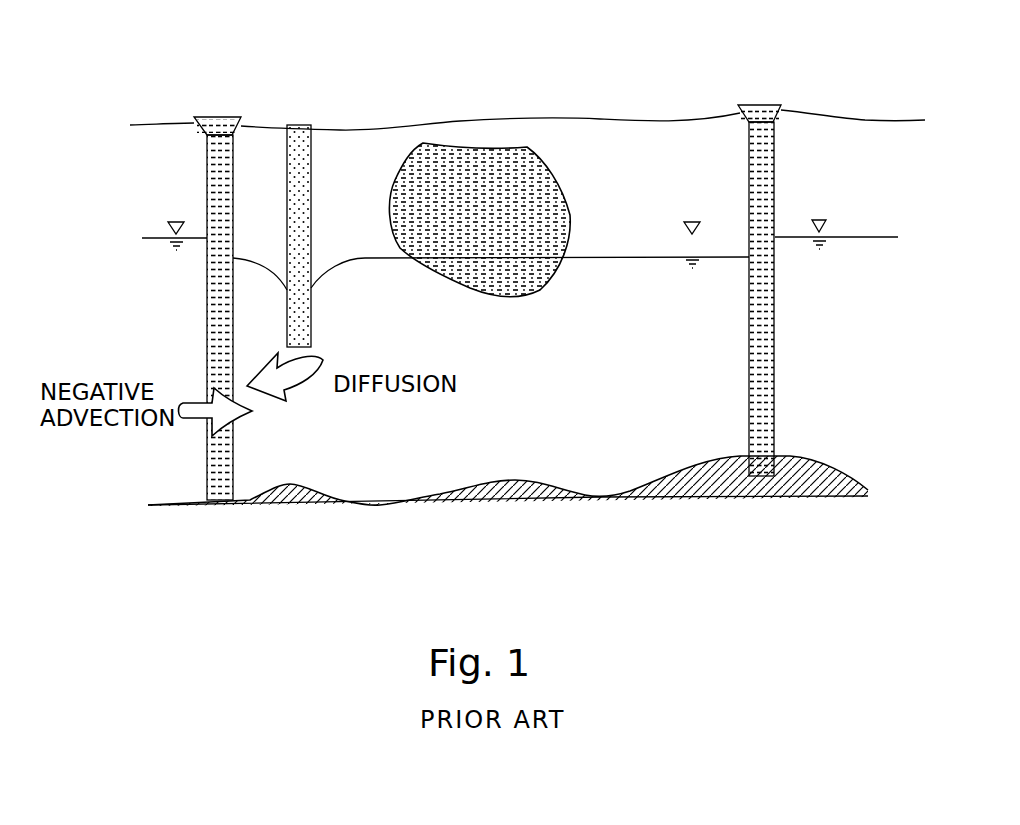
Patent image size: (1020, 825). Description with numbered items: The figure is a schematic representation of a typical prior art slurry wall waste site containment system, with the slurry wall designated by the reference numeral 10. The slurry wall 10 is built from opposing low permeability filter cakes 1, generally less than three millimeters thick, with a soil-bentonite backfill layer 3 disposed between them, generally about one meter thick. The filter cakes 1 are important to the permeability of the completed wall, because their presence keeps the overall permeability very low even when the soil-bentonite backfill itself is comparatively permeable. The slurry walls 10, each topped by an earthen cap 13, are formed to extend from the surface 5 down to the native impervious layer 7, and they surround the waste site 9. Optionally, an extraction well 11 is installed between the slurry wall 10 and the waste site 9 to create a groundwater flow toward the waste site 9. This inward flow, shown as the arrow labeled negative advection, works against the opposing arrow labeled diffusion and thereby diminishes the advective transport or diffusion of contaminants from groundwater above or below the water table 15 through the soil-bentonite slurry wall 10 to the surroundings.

The filter cakes 1 is at (760, 253).
The soil-bentonite backfill layer 3 is at (764, 198).
The surface 5 is at (866, 120).
The native impervious layer 7 is at (830, 464).
The waste site 9 is at (567, 189).
The slurry wall 10 is at (183, 76).
The extraction well 11 is at (301, 120).
The earthen cap 13 is at (768, 102).
The water table 15 is at (855, 236).